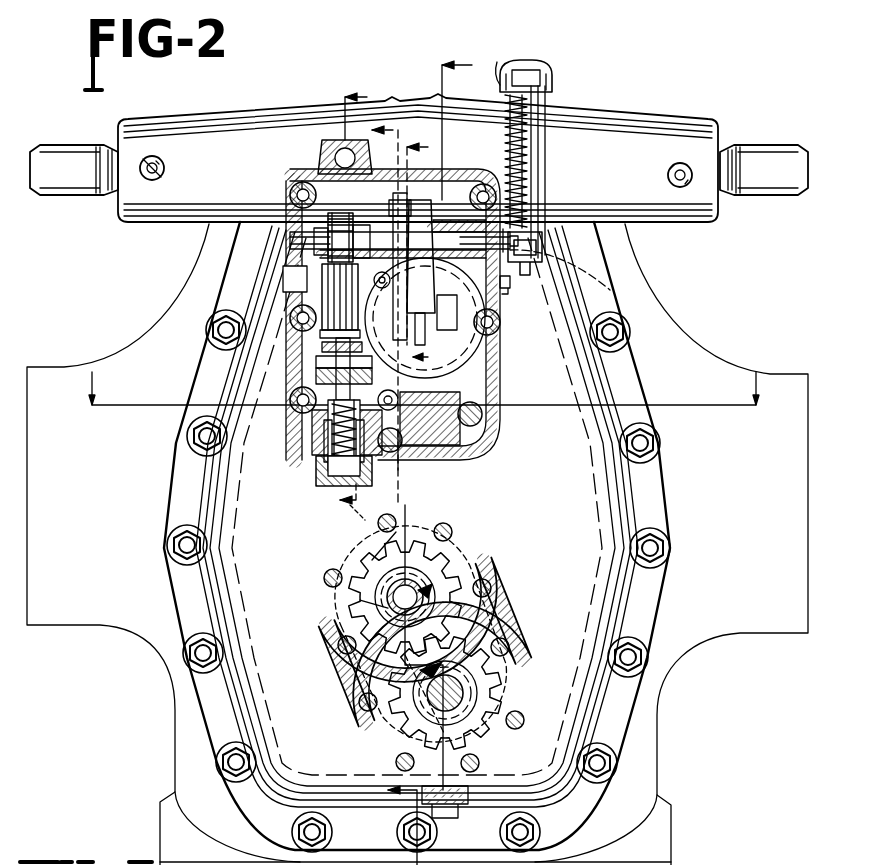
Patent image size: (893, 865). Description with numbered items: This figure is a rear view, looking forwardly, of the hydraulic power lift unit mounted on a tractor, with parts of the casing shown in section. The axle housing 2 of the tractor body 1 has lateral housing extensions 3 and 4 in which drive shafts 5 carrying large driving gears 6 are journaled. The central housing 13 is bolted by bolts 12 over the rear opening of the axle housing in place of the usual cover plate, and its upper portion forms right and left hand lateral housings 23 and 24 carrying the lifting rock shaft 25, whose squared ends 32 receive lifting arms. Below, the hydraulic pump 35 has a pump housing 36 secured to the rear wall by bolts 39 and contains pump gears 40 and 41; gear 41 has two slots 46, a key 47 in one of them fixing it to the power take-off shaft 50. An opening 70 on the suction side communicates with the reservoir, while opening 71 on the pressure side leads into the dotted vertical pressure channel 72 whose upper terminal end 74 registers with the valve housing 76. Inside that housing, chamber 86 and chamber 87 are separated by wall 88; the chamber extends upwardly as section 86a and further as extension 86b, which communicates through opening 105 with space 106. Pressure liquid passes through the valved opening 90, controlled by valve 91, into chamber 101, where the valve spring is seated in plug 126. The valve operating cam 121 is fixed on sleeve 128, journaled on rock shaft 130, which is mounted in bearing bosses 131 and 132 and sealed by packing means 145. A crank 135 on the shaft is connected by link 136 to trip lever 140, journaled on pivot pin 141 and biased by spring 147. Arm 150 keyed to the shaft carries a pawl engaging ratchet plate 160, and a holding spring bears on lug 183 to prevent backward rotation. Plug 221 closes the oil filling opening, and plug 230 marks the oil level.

The tractor body 1 is at (457, 119).
The axle housing 2 is at (670, 688).
The housing extension 3 is at (42, 376).
The housing extension 4 is at (776, 382).
The drive shaft 5 is at (418, 248).
The driving gear 6 is at (345, 296).
The bolts 12 is at (200, 640).
The central housing 13 is at (555, 385).
The right hand lateral housing 23 is at (656, 140).
The left hand lateral housing 24 is at (196, 136).
The lifting rock shaft 25 is at (724, 152).
The squared ends 32 is at (66, 165).
The hydraulic pump 35 is at (486, 572).
The pump housing 36 is at (355, 680).
The bolts 39 is at (368, 526).
The pump gear 40 is at (432, 570).
The pump gear 41 is at (462, 690).
The slots 46 is at (500, 640).
The key 47 is at (400, 708).
The power take-off shaft 50 is at (450, 692).
The opening 70 is at (478, 606).
The opening 71 is at (360, 660).
The pressure channel 72 is at (352, 508).
The upper terminal end 74 is at (328, 436).
The valve housing 76 is at (508, 372).
The chamber 86 is at (388, 452).
The upper chamber section 86a is at (316, 400).
The upward extension 86b is at (326, 345).
The chamber 87 is at (480, 432).
The wall 88 is at (430, 445).
The valved opening 90 is at (379, 394).
The valve 91 is at (312, 418).
The chamber 101 is at (312, 446).
The opening 105 is at (318, 362).
The space 106 is at (320, 378).
The valve operating cam 121 is at (292, 192).
The plug 126 is at (322, 480).
The sleeve 128 is at (348, 222).
The rock shaft 130 is at (440, 238).
The bearing boss 131 is at (303, 298).
The bearing boss 132 is at (509, 328).
The crank 135 is at (532, 267).
The link 136 is at (538, 190).
The trip lever 140 is at (540, 72).
The pivot pin 141 is at (546, 86).
The packing means 145 is at (486, 184).
The spring 147 is at (518, 170).
The arm 150 is at (423, 263).
The ratchet plate 160 is at (425, 289).
The lug 183 is at (396, 265).
The plug 221 is at (326, 152).
The plug 230 is at (505, 295).